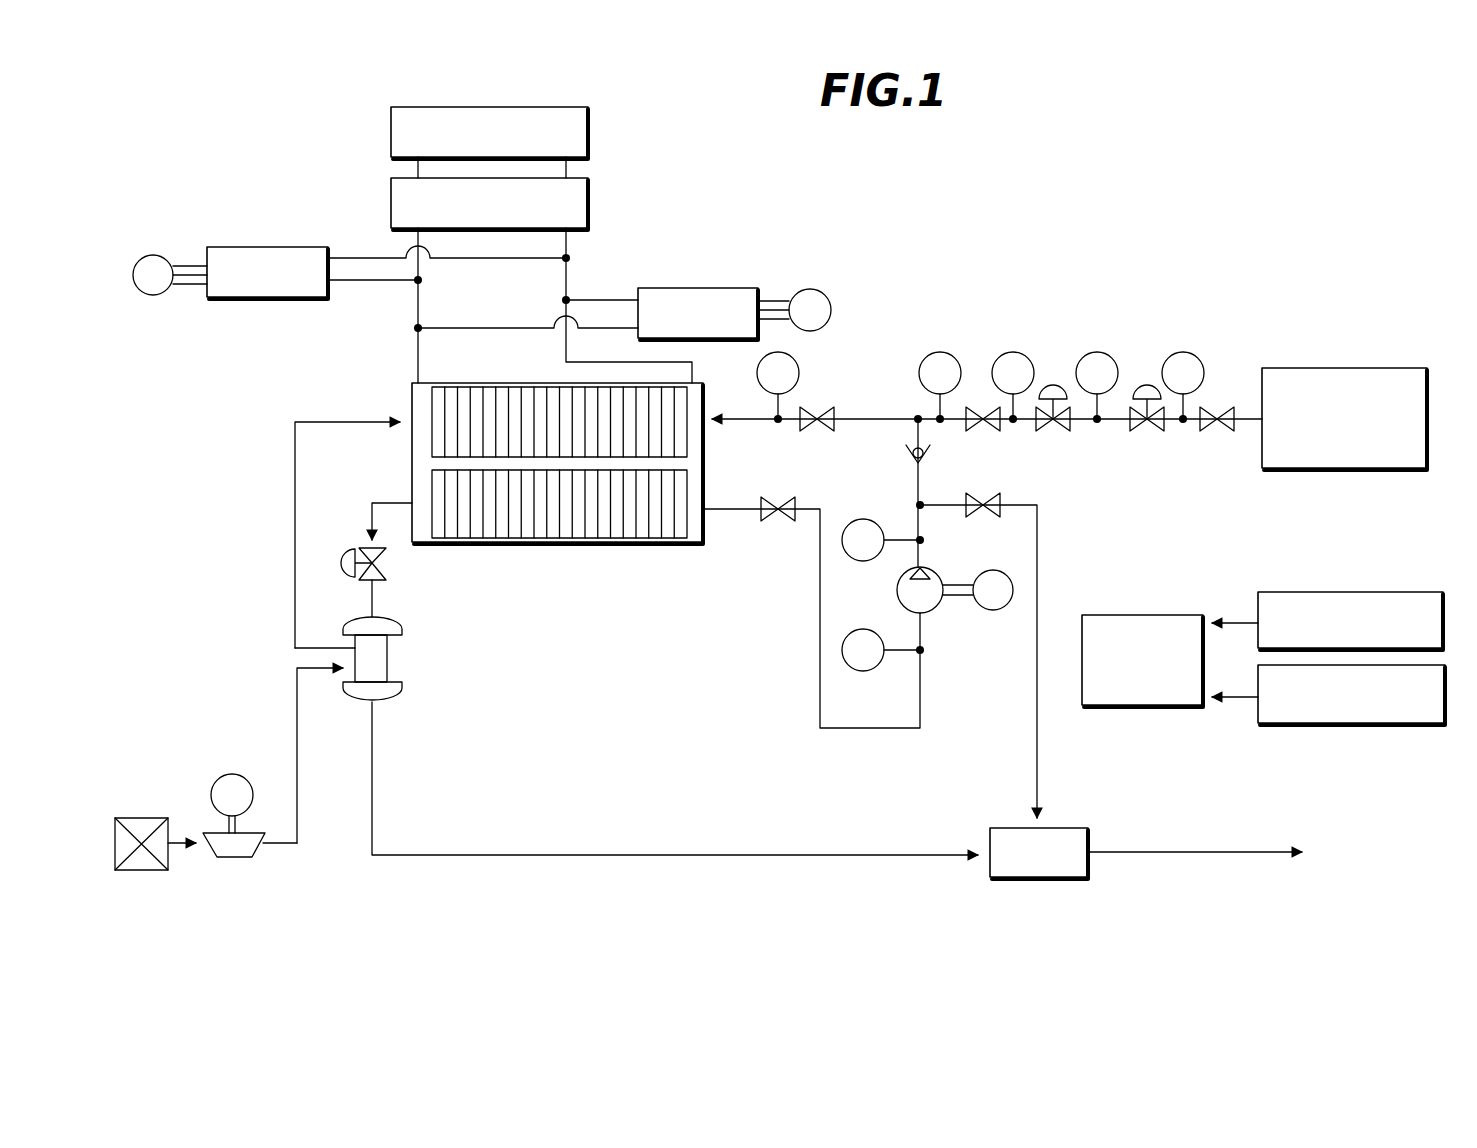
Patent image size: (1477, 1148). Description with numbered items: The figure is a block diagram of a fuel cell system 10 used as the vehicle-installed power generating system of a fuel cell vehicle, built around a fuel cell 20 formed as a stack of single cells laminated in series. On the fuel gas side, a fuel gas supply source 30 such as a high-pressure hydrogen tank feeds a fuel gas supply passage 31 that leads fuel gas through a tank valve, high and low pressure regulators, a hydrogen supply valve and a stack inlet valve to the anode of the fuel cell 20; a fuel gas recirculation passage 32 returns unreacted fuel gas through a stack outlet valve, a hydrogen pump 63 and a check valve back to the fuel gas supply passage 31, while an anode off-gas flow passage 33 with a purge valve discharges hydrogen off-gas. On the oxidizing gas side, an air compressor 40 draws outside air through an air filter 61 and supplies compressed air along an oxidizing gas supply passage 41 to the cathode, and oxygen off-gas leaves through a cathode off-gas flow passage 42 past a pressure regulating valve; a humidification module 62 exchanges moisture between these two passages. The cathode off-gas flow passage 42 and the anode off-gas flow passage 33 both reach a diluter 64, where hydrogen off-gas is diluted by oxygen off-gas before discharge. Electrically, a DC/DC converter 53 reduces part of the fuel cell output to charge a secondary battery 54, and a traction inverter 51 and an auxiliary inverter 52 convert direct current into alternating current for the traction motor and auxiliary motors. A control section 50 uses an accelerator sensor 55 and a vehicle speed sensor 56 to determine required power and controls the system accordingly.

The fuel cell system 10 is at (1026, 208).
The fuel cell 20 is at (636, 543).
The fuel gas supply source 30 is at (1345, 367).
The fuel gas supply passage 31 is at (878, 418).
The fuel gas recirculation passage 32 is at (820, 622).
The anode off-gas flow passage 33 is at (1037, 622).
The air compressor 40 is at (243, 858).
The oxidizing gas supply passage 41 is at (358, 420).
The cathode off-gas flow passage 42 is at (390, 502).
The control section 50 is at (1155, 612).
The traction inverter 51 is at (688, 288).
The auxiliary inverter 52 is at (268, 247).
The DC/DC converter 53 is at (588, 208).
The secondary battery 54 is at (588, 138).
The accelerator sensor 55 is at (1336, 591).
The vehicle speed sensor 56 is at (1328, 724).
The air filter 61 is at (143, 817).
The humidification module 62 is at (395, 660).
The hydrogen pump 63 is at (945, 605).
The diluter 64 is at (1088, 840).